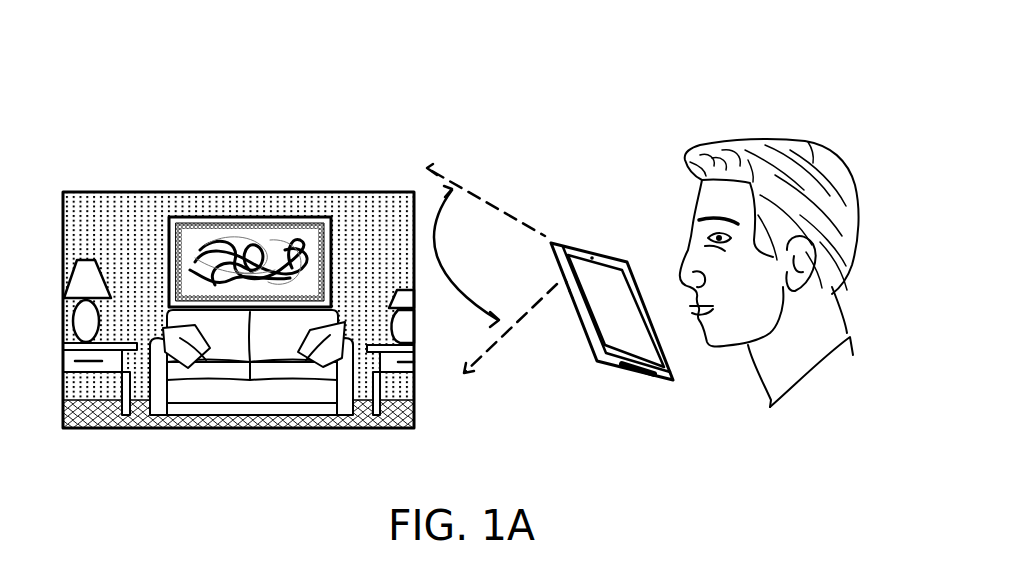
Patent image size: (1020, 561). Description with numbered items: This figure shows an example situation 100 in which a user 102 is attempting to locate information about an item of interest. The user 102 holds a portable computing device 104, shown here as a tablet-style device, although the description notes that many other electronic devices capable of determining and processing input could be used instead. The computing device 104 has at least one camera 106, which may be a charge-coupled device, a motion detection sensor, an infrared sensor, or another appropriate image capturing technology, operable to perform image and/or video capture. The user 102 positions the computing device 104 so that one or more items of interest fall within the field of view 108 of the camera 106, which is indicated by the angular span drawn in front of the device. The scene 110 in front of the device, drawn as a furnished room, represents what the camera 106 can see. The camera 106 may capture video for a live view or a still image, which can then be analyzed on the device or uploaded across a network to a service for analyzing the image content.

The situation 100 is at (728, 88).
The user 102 is at (686, 189).
The computing device 104 is at (606, 370).
The camera 106 is at (592, 257).
The field of view 108 is at (477, 266).
The scene / room 110 is at (120, 176).